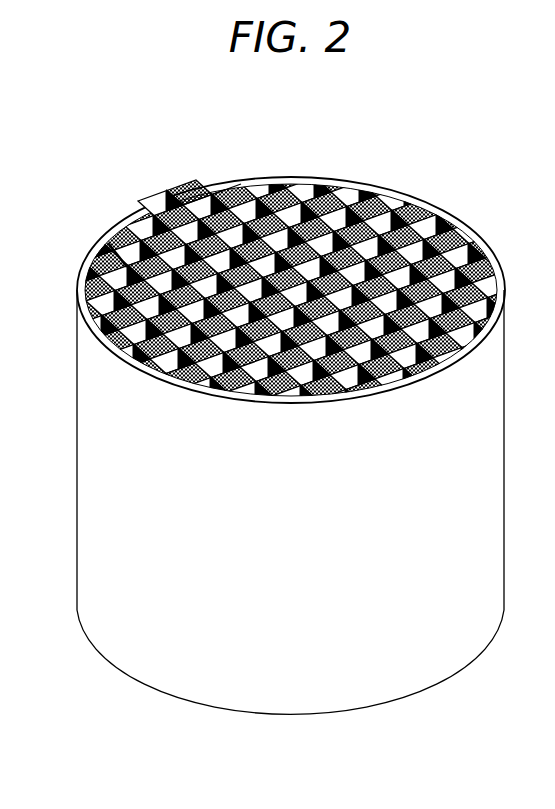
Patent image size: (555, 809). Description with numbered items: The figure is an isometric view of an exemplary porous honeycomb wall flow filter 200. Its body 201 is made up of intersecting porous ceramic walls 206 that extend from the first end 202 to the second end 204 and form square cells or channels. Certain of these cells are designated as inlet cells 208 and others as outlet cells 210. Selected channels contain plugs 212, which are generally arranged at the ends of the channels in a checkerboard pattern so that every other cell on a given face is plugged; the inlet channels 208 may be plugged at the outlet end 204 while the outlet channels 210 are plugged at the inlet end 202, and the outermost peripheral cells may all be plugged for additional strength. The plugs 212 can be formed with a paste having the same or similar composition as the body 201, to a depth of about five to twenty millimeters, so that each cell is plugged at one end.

The honeycomb wall flow filter 200 is at (422, 190).
The body 201 is at (108, 243).
The first end 202 is at (456, 222).
The second end 204 is at (395, 703).
The porous ceramic walls 206 is at (346, 183).
The inlet cells 208 is at (197, 195).
The outlet cells 210 is at (148, 212).
The plugs 212 is at (236, 196).